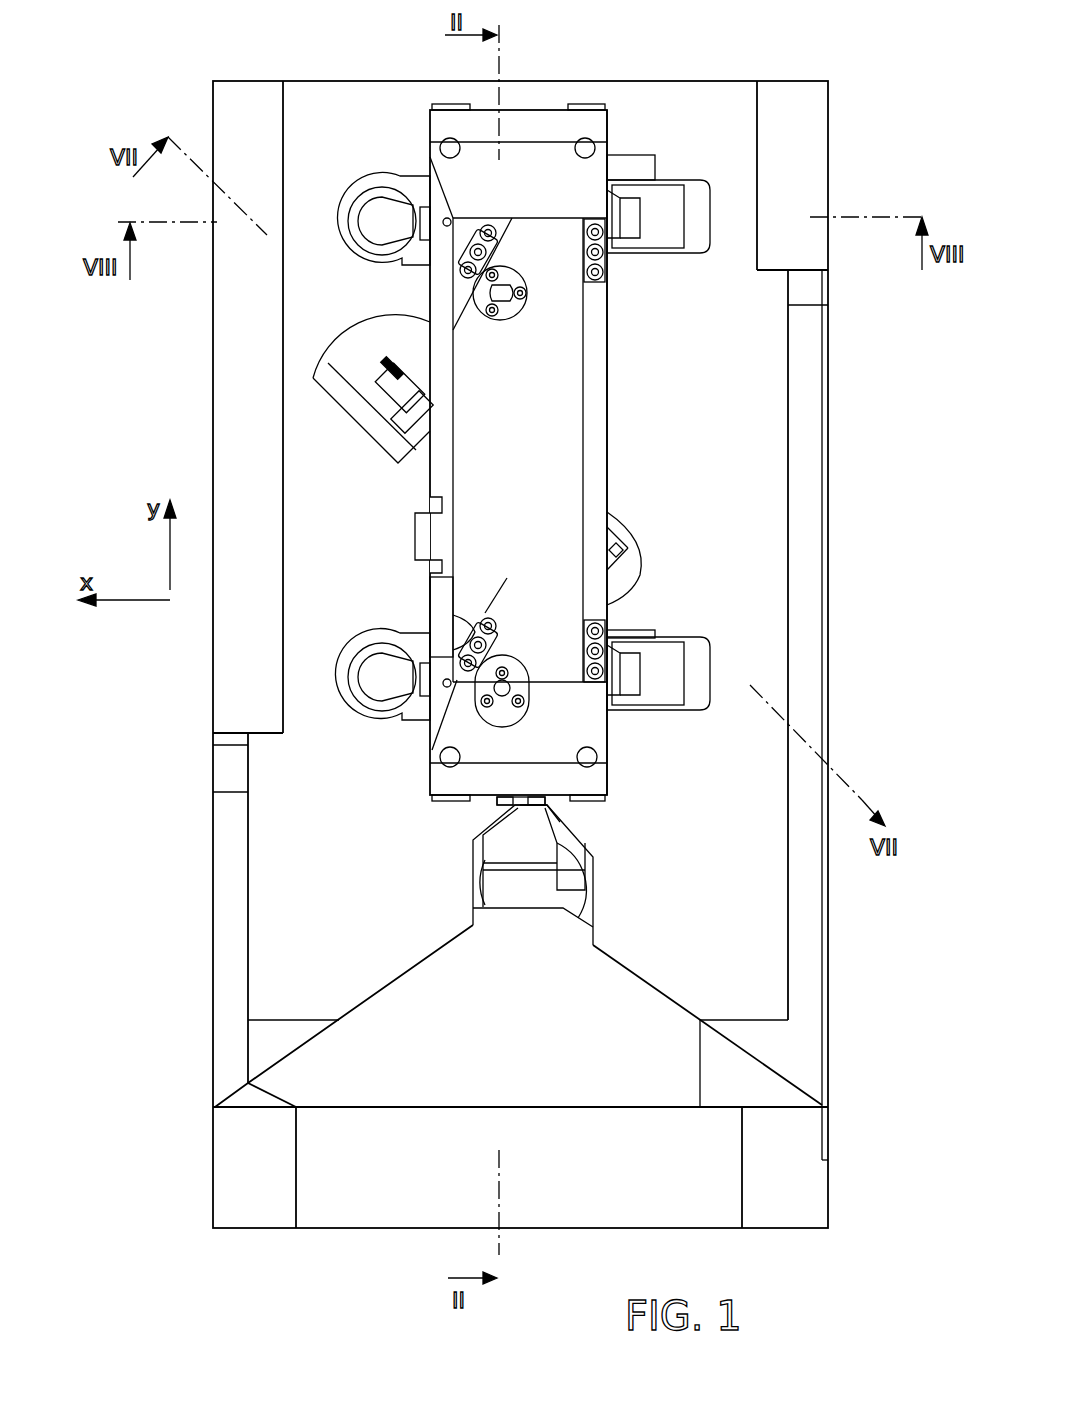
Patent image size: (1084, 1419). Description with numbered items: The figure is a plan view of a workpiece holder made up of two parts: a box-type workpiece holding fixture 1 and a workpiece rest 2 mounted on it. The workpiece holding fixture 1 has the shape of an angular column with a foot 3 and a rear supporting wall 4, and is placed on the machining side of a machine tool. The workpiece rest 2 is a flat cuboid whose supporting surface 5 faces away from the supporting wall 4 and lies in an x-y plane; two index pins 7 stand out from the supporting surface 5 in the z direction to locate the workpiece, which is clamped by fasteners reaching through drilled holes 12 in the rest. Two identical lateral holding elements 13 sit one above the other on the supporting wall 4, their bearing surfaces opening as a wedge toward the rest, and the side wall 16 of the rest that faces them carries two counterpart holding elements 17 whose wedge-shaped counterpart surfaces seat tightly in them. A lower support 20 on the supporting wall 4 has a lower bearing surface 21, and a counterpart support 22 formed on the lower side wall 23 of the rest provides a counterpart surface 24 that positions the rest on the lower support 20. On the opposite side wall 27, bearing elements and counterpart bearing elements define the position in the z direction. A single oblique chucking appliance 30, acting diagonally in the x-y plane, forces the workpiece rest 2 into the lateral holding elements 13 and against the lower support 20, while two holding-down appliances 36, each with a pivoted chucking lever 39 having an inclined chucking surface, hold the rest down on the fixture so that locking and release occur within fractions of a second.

The workpiece holding fixture 1 is at (340, 66).
The workpiece rest 2 is at (625, 418).
The foot 3 is at (388, 1181).
The rear supporting wall 4 is at (708, 488).
The supporting surface 5 is at (524, 488).
The index pins 7 is at (508, 307).
The drilled holes 12 is at (585, 252).
The lateral holding elements 13 is at (650, 255).
The side wall 16 is at (612, 367).
The counterpart holding elements 17 is at (614, 226).
The lower support 20 is at (537, 853).
The lower bearing surface 21 is at (548, 812).
The counterpart support 22 is at (530, 800).
The lower side wall 23 is at (488, 790).
The counterpart surface 24 is at (542, 803).
The side wall 27 is at (428, 598).
The oblique chucking appliance 30 is at (392, 428).
The holding-down appliances 36 is at (345, 262).
The chucking lever 39 is at (380, 228).